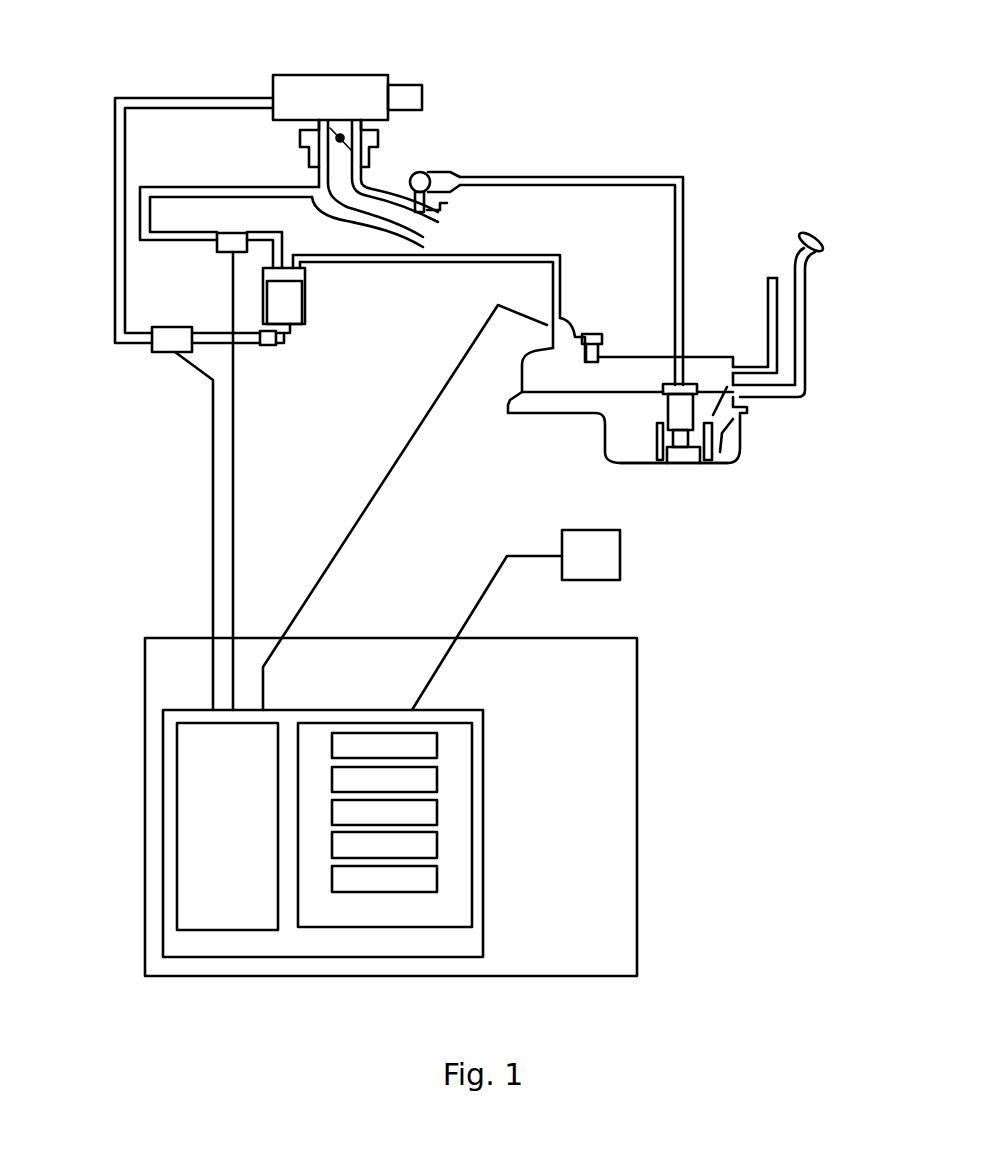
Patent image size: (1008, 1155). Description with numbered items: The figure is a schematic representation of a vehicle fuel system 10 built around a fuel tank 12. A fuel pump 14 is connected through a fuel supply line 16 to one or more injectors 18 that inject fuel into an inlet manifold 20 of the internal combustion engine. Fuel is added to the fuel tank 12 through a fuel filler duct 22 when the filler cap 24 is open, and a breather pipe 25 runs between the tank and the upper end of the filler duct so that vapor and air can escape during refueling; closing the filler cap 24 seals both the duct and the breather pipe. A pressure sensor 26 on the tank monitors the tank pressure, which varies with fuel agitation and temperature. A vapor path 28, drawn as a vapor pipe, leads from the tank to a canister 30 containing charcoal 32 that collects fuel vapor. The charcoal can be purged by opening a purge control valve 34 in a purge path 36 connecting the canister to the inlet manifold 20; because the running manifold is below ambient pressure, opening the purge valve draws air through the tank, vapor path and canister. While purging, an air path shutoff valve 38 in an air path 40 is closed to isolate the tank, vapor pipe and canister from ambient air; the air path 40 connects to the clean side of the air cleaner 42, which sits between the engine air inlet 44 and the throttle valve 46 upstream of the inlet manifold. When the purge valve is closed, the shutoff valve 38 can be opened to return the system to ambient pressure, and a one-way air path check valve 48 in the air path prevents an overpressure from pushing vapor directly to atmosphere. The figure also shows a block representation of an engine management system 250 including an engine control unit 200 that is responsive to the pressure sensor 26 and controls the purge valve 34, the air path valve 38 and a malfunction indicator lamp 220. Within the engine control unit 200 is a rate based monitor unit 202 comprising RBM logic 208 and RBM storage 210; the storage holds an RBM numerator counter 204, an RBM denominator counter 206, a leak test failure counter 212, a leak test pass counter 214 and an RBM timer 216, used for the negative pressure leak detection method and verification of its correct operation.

The fuel system 10 is at (810, 442).
The fuel tank 12 is at (742, 460).
The fuel pump 14 is at (668, 410).
The fuel supply line 16 is at (650, 177).
The injectors 18 is at (440, 170).
The inlet manifold 20 is at (372, 208).
The fuel filler duct 22 is at (806, 322).
The filler cap 24 is at (818, 240).
The breather pipe 25 is at (767, 315).
The pressure sensor 26 is at (596, 334).
The vapor path 28 is at (520, 255).
The canister 30 is at (305, 315).
The charcoal 32 is at (287, 306).
The purge control valve 34 is at (240, 233).
The purge path 36 is at (210, 187).
The air path shutoff valve 38 is at (170, 352).
The air path 40 is at (115, 300).
The air cleaner 42 is at (345, 75).
The air inlet 44 is at (422, 95).
The throttle valve 46 is at (338, 137).
The air path check valve 48 is at (270, 345).
The engine control unit 200 is at (637, 932).
The rate based monitor unit 202 is at (483, 945).
The RBM numerator counter 204 is at (437, 746).
The RBM denominator counter 206 is at (437, 779).
The RBM logic 208 is at (177, 828).
The RBM storage 210 is at (357, 723).
The leak test failure counter 212 is at (437, 812).
The leak test pass counter 214 is at (437, 845).
The RBM timer 216 is at (437, 879).
The malfunction indicator lamp 220 is at (619, 550).
The engine management system 250 is at (700, 808).